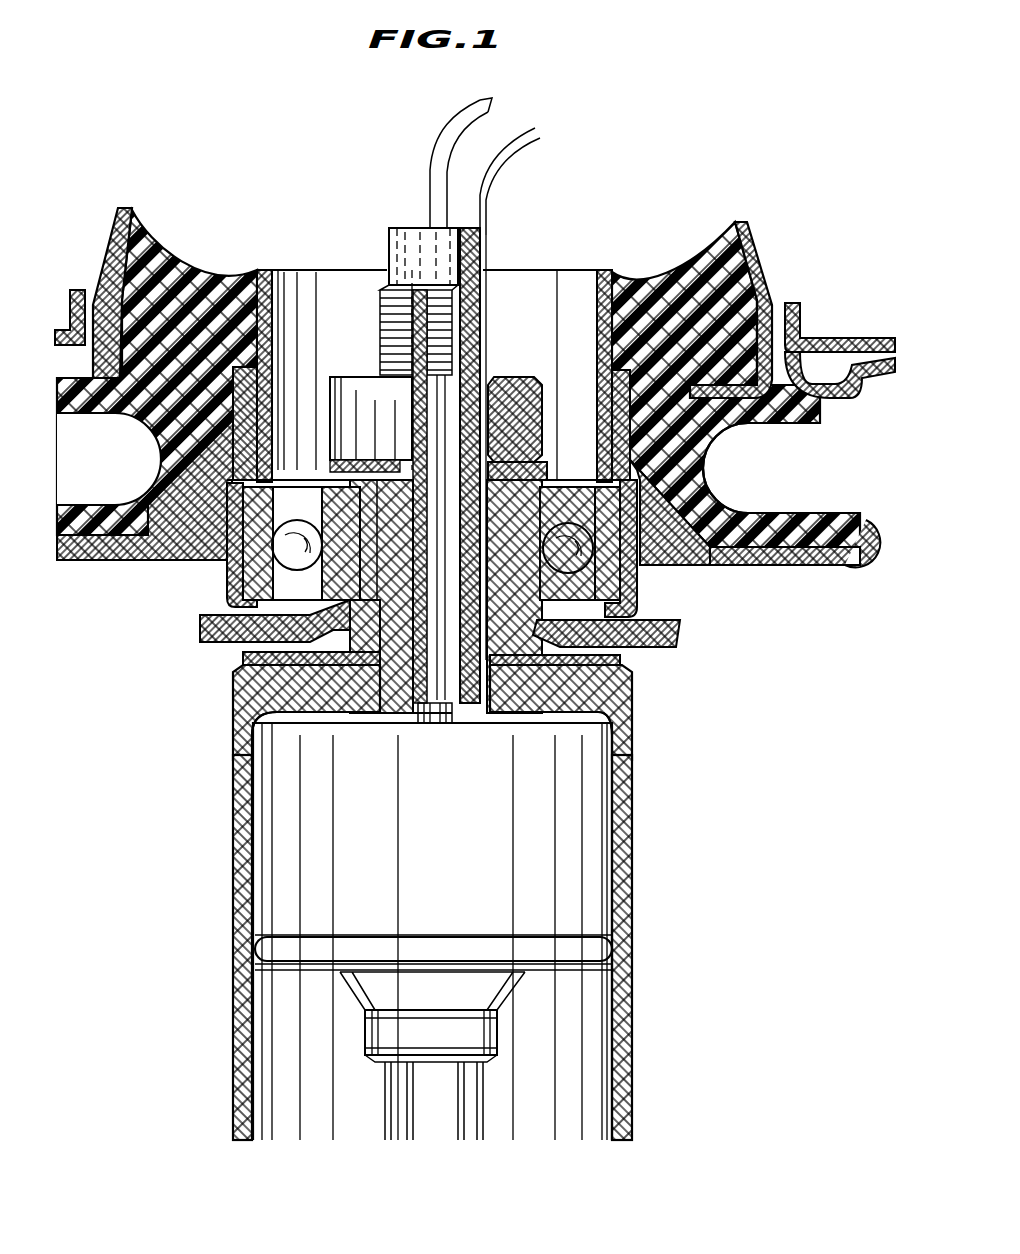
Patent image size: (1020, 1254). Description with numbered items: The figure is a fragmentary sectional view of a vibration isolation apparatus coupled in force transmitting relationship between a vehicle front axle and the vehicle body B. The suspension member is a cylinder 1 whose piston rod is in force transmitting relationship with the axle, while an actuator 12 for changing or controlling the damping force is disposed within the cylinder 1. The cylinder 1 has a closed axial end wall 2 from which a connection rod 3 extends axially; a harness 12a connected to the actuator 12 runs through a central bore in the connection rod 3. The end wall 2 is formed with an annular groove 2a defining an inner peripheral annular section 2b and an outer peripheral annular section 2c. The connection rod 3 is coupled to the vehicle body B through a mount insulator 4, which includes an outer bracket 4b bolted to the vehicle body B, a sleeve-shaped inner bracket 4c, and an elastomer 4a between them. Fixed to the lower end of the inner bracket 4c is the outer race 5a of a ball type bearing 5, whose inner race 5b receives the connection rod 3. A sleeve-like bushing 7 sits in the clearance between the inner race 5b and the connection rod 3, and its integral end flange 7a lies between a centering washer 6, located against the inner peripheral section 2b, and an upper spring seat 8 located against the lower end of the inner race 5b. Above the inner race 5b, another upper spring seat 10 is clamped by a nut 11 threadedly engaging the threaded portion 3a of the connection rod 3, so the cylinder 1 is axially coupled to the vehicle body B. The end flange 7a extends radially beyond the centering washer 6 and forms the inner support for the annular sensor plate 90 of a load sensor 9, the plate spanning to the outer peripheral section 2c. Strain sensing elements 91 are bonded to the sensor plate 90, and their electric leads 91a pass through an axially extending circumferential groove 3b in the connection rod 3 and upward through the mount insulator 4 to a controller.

The cylinder 1 is at (626, 1033).
The closed axial end wall 2 is at (530, 705).
The annular groove 2a is at (600, 667).
The inner peripheral annular section 2b is at (388, 692).
The outer peripheral annular section 2c is at (265, 653).
The connection rod 3 is at (386, 248).
The threaded portion 3a is at (345, 340).
The axially extending circumferential groove 3b is at (502, 680).
The mount insulator 4 is at (626, 275).
The elastomer 4a is at (734, 420).
The outer bracket 4b is at (762, 262).
The inner bracket 4c is at (600, 332).
The ball type bearing 5 is at (245, 557).
The outer race 5a is at (240, 592).
The inner race 5b is at (330, 492).
The centering washer 6 is at (357, 665).
The sleeve-like bushing 7 is at (362, 527).
The end flange 7a is at (282, 674).
The upper spring seat 8 is at (212, 630).
The load sensor 9 is at (612, 628).
The upper spring seat 10 is at (300, 480).
The nut 11 is at (348, 378).
The actuator 12 is at (262, 890).
The harness 12a is at (428, 180).
The sensor plate 90 is at (610, 660).
The strain sensing elements 91 is at (580, 670).
The electric leads 91a is at (512, 143).
The vehicle body B is at (822, 333).